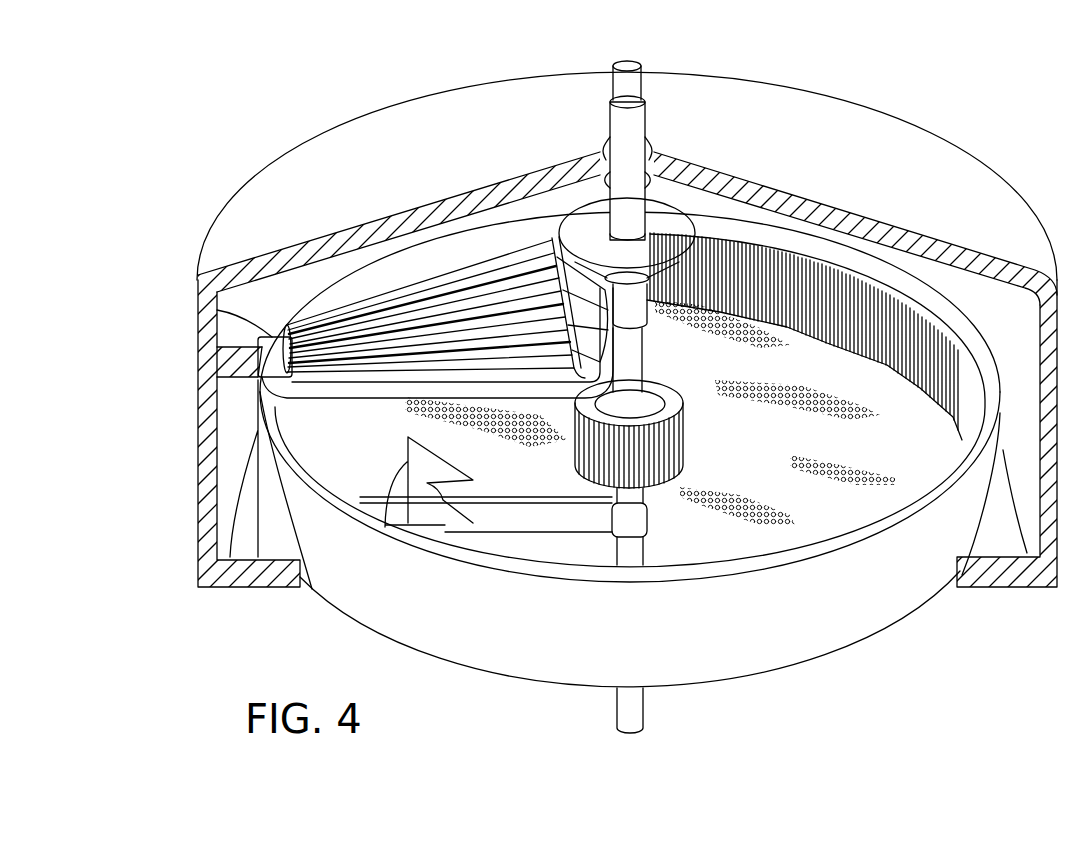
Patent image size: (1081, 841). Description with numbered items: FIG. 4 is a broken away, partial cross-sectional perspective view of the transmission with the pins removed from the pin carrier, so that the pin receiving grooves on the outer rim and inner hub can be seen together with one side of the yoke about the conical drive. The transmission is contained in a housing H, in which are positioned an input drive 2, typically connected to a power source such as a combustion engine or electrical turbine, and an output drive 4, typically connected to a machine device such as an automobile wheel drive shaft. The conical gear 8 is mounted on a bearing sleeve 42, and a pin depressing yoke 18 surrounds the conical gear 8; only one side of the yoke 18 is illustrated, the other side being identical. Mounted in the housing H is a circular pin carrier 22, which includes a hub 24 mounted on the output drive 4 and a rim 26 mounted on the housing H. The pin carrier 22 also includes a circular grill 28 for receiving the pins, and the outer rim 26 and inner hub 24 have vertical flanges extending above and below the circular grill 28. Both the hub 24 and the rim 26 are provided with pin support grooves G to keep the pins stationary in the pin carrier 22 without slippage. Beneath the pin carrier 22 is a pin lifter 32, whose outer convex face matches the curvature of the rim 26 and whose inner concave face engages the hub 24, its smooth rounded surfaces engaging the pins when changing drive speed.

The housing H is at (363, 168).
The input drive 2 is at (638, 123).
The output drive 4 is at (632, 86).
The conical gear 8 is at (397, 287).
The pin depressing yoke 18 is at (300, 420).
The pin carrier 22 is at (903, 623).
The hub 24 is at (683, 420).
The rim 26 is at (848, 630).
The circular grill 28 is at (866, 384).
The pin lifter 32 is at (417, 463).
The bearing sleeve 42 is at (275, 330).
The pin support grooves G is at (916, 376).